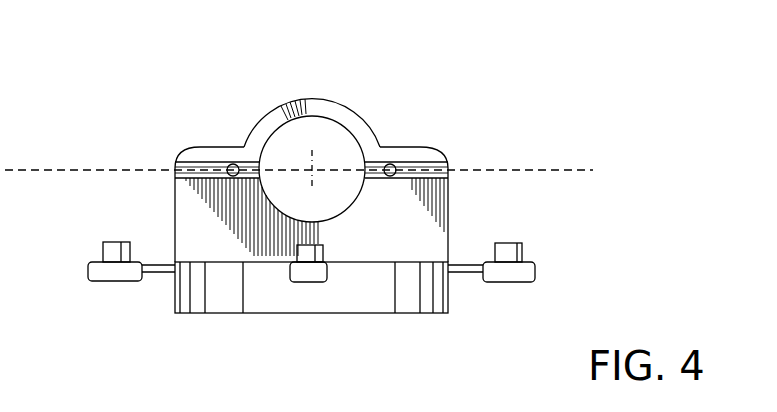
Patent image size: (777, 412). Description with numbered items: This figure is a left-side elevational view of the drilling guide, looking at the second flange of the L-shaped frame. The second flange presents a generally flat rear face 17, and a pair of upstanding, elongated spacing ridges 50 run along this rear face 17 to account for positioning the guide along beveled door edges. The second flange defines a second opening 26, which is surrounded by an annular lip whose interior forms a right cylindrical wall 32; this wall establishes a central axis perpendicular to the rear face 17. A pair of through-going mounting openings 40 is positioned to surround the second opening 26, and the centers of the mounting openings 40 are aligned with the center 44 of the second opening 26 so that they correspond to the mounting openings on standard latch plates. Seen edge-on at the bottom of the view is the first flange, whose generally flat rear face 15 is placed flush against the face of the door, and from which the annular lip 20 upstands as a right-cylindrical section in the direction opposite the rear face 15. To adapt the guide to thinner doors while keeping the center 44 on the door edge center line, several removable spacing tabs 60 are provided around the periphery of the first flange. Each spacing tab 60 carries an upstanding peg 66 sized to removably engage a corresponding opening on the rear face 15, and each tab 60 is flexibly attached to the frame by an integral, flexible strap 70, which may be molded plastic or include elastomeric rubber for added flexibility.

The rear face 15 is at (452, 258).
The rear face 17 is at (413, 250).
The annular lip 20 is at (227, 285).
The second opening 26 is at (325, 220).
The right cylindrical wall 32 is at (291, 124).
The mounting openings 40 is at (232, 163).
The center 44 is at (324, 154).
The spacing ridges 50 is at (186, 156).
The spacing tabs 60 is at (108, 283).
The peg 66 is at (103, 247).
The flexible strap 70 is at (160, 273).